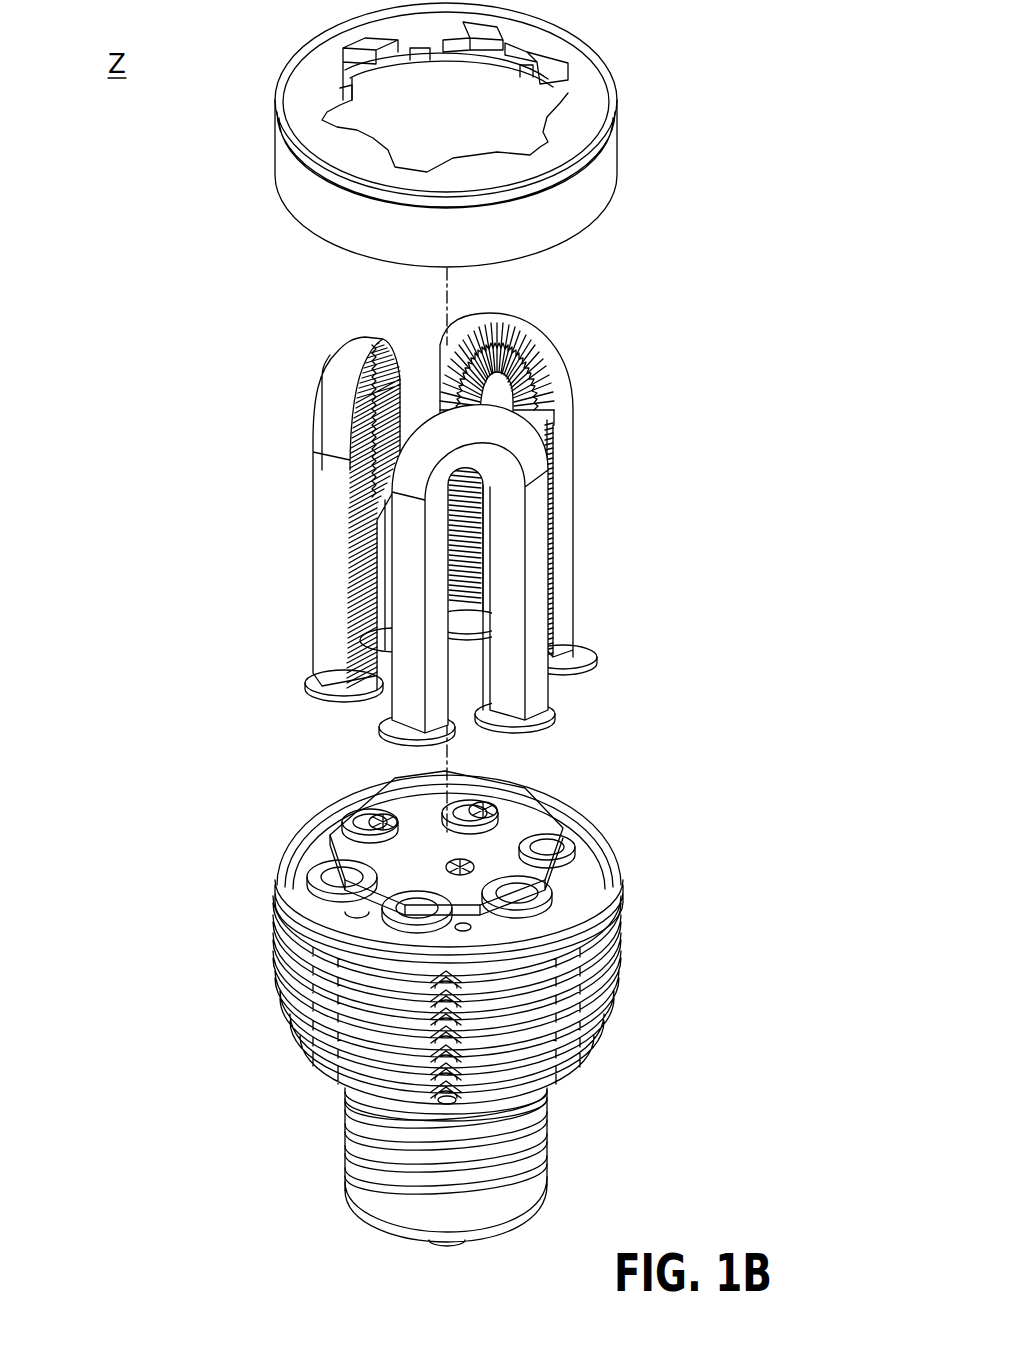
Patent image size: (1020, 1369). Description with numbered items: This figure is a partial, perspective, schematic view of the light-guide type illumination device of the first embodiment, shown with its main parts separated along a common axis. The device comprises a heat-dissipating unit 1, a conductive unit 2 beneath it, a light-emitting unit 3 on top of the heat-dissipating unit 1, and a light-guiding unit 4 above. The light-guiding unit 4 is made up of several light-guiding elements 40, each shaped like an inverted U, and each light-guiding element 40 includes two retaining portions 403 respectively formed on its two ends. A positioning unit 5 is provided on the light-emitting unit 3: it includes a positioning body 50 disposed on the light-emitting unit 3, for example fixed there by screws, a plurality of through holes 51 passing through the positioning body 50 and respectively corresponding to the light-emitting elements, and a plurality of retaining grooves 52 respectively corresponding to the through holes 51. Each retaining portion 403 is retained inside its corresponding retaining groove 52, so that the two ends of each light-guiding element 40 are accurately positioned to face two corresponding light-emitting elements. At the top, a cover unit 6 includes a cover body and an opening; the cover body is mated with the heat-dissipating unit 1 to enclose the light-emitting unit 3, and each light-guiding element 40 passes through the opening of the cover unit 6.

The heat-dissipating unit 1 is at (266, 948).
The conductive unit 2 is at (323, 1140).
The light-emitting unit 3 is at (308, 822).
The light-guiding unit 4 is at (486, 529).
The light-guiding element 40 is at (486, 529).
The retaining portion 403 is at (565, 655).
The positioning unit 5 is at (474, 811).
The positioning body 50 is at (522, 878).
The through hole 51 is at (545, 845).
The retaining groove 52 is at (605, 880).
The cover unit 6 is at (646, 141).